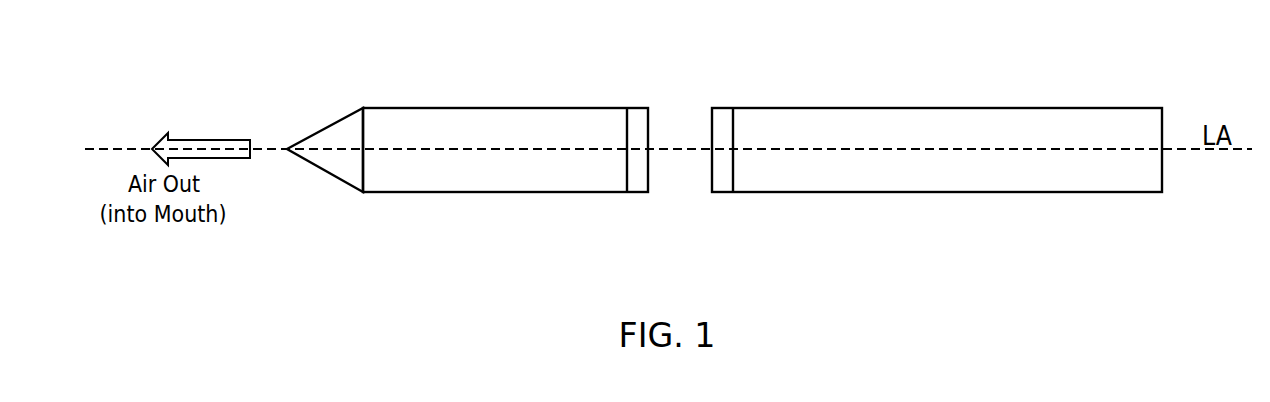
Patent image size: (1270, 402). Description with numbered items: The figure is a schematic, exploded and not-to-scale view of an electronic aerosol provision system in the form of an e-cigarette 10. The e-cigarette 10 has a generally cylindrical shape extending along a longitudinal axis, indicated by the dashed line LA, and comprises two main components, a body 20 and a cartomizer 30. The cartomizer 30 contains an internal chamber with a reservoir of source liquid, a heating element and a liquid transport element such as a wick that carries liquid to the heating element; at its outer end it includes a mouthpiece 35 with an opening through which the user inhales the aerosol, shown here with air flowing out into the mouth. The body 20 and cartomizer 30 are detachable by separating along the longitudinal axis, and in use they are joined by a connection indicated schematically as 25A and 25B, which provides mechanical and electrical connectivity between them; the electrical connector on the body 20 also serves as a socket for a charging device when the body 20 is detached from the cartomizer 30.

The e-cigarette 10 is at (390, 252).
The body 20 is at (952, 193).
The connection 25A is at (637, 193).
The connection 25B is at (723, 108).
The cartomizer 30 is at (502, 108).
The mouthpiece 35 is at (333, 148).